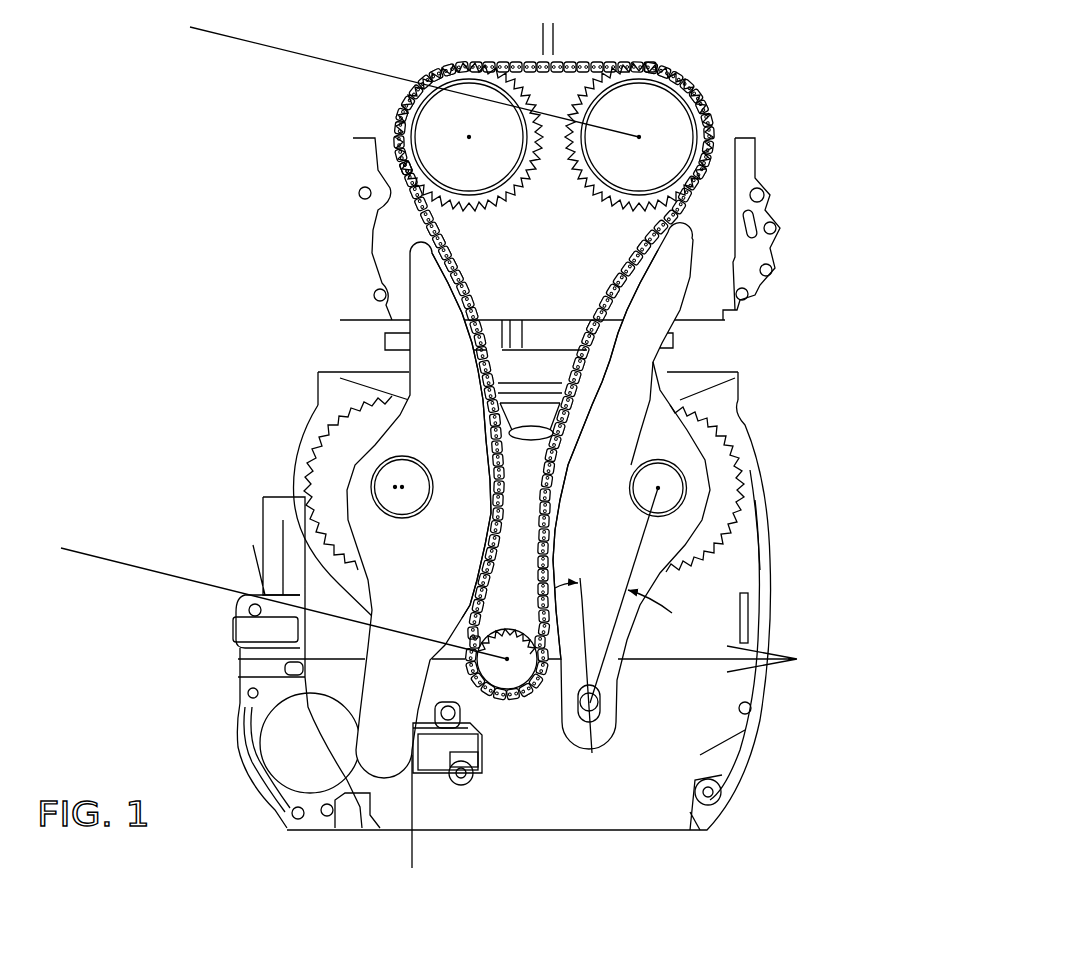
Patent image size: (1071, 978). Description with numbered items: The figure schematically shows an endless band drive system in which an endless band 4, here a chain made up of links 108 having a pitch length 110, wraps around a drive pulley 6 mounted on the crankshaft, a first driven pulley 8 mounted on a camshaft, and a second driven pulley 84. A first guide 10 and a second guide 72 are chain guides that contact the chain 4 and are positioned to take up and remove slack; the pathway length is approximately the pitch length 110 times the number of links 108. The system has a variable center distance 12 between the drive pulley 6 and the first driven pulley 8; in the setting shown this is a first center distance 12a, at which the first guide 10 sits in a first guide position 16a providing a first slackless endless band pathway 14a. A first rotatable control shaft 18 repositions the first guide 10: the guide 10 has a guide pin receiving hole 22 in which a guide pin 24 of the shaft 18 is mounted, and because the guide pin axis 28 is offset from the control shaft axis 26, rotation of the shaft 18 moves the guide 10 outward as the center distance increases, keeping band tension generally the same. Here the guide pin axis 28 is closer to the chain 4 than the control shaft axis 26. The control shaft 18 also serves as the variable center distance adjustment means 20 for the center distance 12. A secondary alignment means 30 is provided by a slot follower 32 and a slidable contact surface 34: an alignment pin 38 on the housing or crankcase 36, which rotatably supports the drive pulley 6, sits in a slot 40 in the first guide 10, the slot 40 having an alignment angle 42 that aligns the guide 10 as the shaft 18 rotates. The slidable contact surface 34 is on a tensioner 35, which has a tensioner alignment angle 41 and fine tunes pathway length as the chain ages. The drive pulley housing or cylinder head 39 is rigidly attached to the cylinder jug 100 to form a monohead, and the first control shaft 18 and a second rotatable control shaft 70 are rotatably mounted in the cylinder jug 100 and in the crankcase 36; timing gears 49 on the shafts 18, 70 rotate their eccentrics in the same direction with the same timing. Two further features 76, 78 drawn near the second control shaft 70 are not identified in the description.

The endless band 4 is at (426, 222).
The drive pulley 6 is at (512, 687).
The first driven pulley 8 is at (629, 177).
The second driven pulley 84 is at (474, 177).
The first guide 10 is at (631, 486).
The variable center distance 12 is at (190, 27).
The first center distance 12a is at (61, 548).
The first slackless endless band pathway 14a is at (453, 277).
The first guide position 16a is at (645, 369).
The first rotatable control shaft 18 is at (645, 495).
The variable center distance adjustment means 20 is at (791, 596).
The guide pin receiving hole 22 is at (680, 508).
The guide pin 24 is at (677, 495).
The control shaft axis 26 is at (661, 487).
The guide pin axis 28 is at (658, 488).
The secondary alignment means 30 is at (684, 713).
The slot follower 32 is at (695, 821).
The slidable contact surface 34 is at (390, 745).
The tensioner 35 is at (473, 748).
The housing or crankcase 36 is at (534, 660).
The alignment pin 38 is at (593, 702).
The drive pulley housing or cylinder head 39 is at (747, 173).
The slot 40 is at (600, 713).
The tensioner alignment angle 41 is at (432, 855).
The alignment angle 42 is at (613, 662).
The timing gears 49 is at (745, 460).
The second rotatable control shaft 70 is at (375, 507).
The second guide 72 is at (395, 510).
The guide pivot center 76 is at (395, 487).
The guide pivot pin 78 is at (402, 487).
The cylinder jug 100 is at (570, 333).
The links 108 is at (688, 62).
The pitch length 110 is at (575, 34).